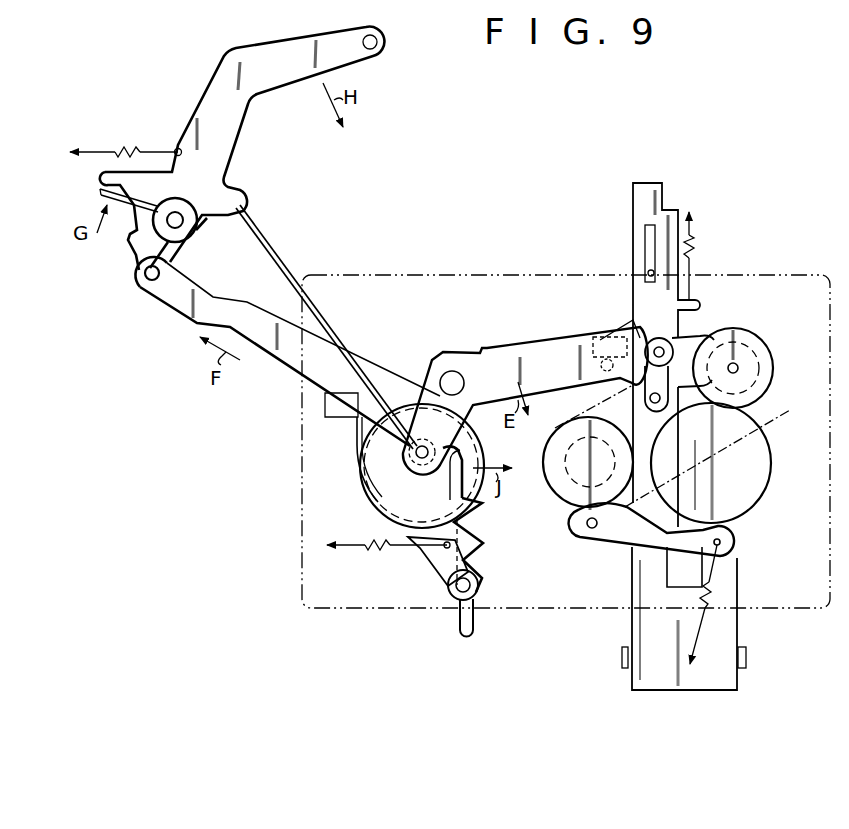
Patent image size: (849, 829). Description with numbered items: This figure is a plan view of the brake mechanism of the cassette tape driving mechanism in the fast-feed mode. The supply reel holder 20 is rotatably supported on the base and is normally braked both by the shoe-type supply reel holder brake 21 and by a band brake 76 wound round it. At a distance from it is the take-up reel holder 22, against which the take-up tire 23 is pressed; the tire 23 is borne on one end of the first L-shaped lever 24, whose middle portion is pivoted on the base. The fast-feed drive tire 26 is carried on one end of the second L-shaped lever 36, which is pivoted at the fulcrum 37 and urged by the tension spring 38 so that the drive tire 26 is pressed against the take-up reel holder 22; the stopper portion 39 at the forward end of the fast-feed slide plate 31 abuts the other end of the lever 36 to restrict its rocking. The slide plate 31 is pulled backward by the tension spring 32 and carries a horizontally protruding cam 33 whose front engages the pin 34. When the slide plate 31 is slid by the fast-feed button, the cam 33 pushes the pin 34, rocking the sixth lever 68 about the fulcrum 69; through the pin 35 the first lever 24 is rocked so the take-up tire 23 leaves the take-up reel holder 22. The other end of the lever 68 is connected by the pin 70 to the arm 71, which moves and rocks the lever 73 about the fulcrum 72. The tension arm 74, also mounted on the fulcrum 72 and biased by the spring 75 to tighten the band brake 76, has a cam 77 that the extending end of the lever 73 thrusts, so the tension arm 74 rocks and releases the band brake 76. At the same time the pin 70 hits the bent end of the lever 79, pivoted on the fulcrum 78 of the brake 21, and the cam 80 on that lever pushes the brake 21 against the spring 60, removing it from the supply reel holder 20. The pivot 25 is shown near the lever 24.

The supply reel holder 20 is at (362, 502).
The supply reel holder brake 21 is at (478, 588).
The take-up reel holder 22 is at (768, 470).
The take-up tire 23 is at (755, 338).
The first L-shaped lever 24 is at (698, 336).
The pivot 25 is at (655, 340).
The fast-feed drive tire 26 is at (556, 488).
The fast-feed slide plate 31 is at (642, 190).
The tension spring 32 is at (698, 250).
The cam 33 is at (626, 318).
The pin 34 is at (600, 366).
The pin 35 is at (655, 406).
The second L-shaped lever 36 is at (606, 542).
The fulcrum 37 is at (582, 536).
The tension spring 38 is at (712, 612).
The stopper portion 39 is at (738, 562).
The spring 60 is at (388, 550).
The sixth lever 68 is at (512, 357).
The fulcrum 69 is at (450, 370).
The pin 70 is at (414, 460).
The arm 71 is at (288, 368).
The fulcrum 72 is at (192, 238).
The lever 73 is at (130, 250).
The tension arm 74 is at (293, 72).
The spring 75 is at (127, 145).
The band brake 76 is at (303, 262).
The cam 77 is at (104, 180).
The fulcrum 78 is at (447, 588).
The lever 79 is at (466, 454).
The cam 80 is at (452, 512).